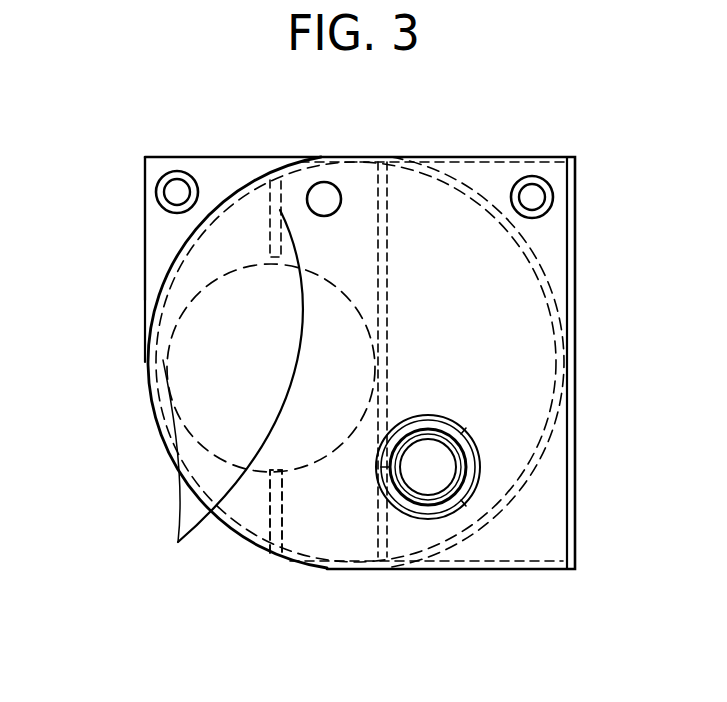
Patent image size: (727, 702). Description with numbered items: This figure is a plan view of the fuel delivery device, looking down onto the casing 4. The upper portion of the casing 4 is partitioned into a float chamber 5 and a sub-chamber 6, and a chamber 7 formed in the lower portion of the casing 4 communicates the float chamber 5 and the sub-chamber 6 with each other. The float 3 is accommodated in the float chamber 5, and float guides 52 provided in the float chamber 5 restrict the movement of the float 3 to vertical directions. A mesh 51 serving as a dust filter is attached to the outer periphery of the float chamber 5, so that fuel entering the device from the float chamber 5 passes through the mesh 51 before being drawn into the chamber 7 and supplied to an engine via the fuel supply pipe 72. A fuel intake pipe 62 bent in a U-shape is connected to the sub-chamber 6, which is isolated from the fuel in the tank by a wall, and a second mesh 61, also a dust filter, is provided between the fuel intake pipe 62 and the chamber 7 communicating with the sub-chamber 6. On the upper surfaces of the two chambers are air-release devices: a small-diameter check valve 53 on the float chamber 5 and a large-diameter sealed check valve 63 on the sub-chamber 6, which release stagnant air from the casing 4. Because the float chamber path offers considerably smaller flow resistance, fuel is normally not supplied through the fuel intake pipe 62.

The float 3 is at (205, 297).
The casing 4 is at (323, 570).
The float chamber 5 is at (243, 540).
The sub-chamber 6 is at (553, 535).
The chamber 7 is at (152, 215).
The mesh 51 is at (145, 320).
The float guides 52 is at (270, 513).
The small-diameter check valve 53 is at (323, 188).
The mesh 61 is at (533, 443).
The fuel intake pipe 62 is at (535, 179).
The large-diameter sealed check valve 63 is at (423, 510).
The fuel supply pipe 72 is at (172, 172).